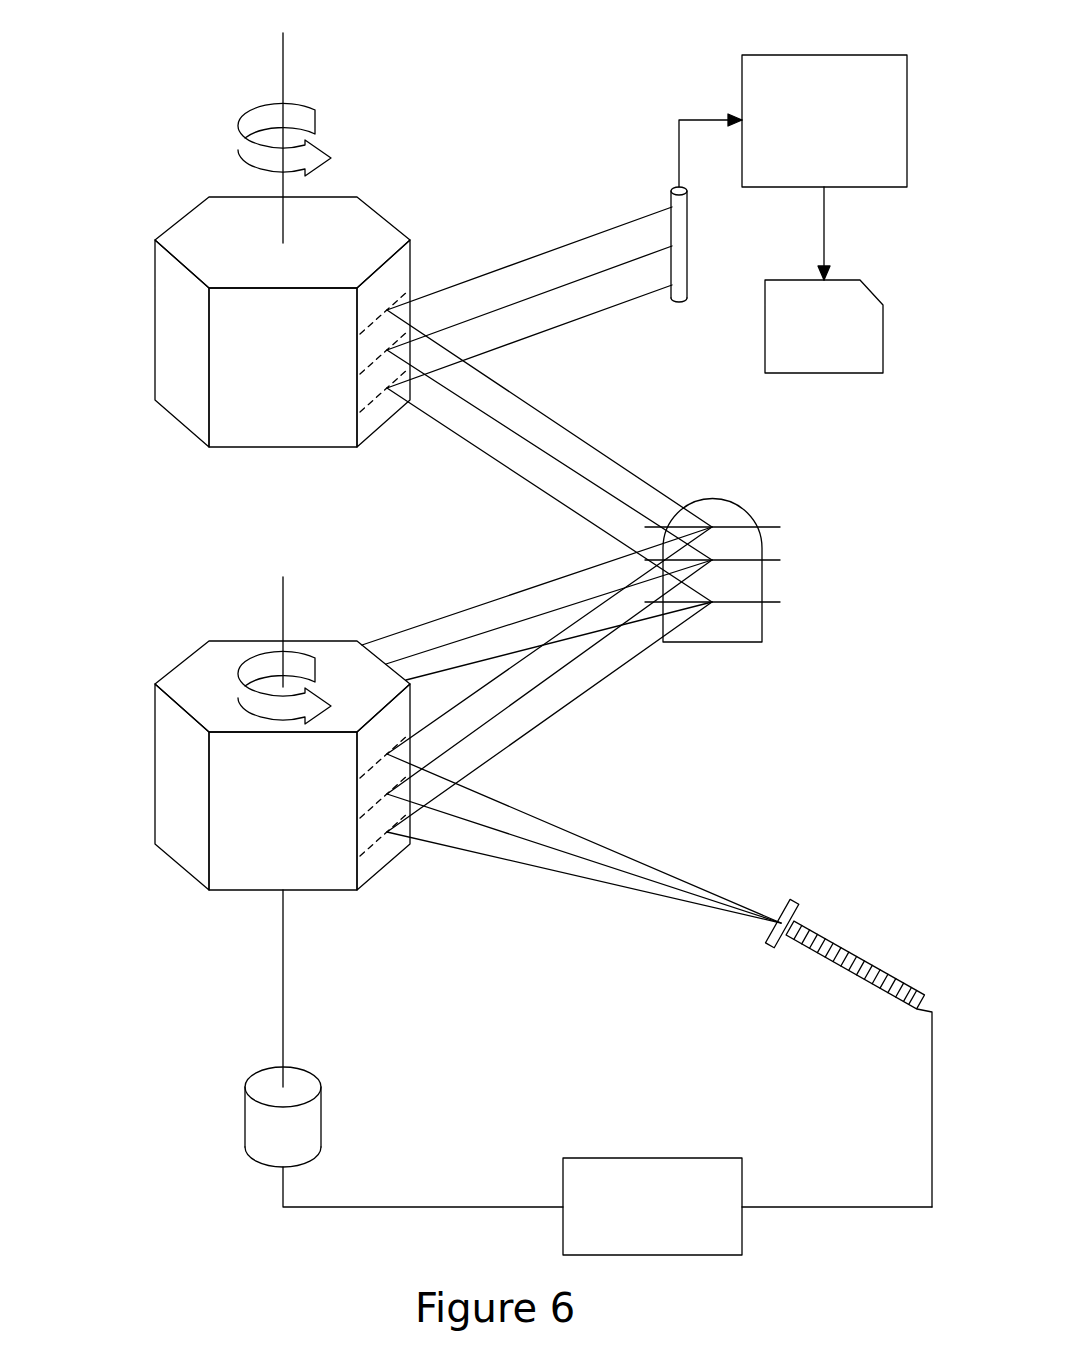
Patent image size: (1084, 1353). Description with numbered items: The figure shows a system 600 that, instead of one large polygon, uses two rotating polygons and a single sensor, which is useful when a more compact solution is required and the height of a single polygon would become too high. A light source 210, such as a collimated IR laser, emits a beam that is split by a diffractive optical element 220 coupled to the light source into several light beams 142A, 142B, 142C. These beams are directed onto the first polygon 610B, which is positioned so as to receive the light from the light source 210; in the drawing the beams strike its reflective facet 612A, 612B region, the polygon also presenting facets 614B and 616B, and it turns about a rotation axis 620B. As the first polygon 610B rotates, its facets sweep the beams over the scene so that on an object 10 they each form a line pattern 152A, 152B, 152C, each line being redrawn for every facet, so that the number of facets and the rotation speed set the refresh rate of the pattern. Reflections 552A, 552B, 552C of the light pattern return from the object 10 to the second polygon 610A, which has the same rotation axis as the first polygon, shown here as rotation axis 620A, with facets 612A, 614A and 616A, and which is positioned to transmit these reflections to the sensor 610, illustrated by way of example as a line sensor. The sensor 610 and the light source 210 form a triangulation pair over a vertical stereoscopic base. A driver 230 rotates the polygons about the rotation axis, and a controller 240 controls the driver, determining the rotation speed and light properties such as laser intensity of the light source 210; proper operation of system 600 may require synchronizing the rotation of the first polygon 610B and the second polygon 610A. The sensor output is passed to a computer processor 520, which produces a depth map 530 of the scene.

The object 10 is at (713, 498).
The light beam 142A is at (650, 866).
The light beam 142B is at (555, 849).
The light beam 142C is at (690, 901).
The line pattern 152A is at (780, 527).
The line pattern 152B is at (783, 561).
The line pattern 152C is at (783, 603).
The light source 210 is at (850, 950).
The diffractive optical element 220 is at (797, 903).
The driver 230 is at (245, 1118).
The controller 240 is at (647, 1158).
The computer processor 520 is at (826, 55).
The depth map 530 is at (795, 280).
The reflection 552A is at (512, 392).
The reflection 552B is at (575, 460).
The reflection 552C is at (520, 478).
The system 600 is at (483, 1044).
The sensor 610 is at (671, 200).
The second polygon 610A is at (290, 286).
The first polygon 610B is at (262, 820).
The reflective facet of first mirror 612A is at (385, 410).
The reflective facet of second mirror 612B is at (385, 852).
The front facet of first mirror 614A is at (245, 435).
The front facet of second mirror 614B is at (247, 878).
The side facet of first mirror 616A is at (172, 344).
The side facet of second mirror 616B is at (172, 788).
The rotation axis of first mirror 620A is at (281, 62).
The rotation axis of second mirror 620B is at (278, 608).